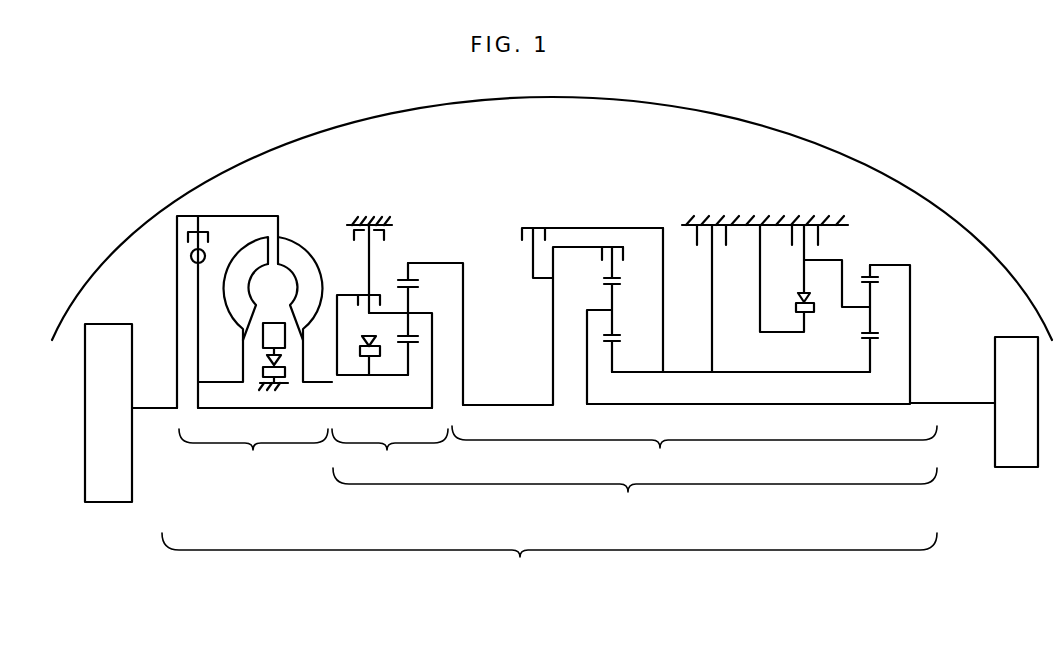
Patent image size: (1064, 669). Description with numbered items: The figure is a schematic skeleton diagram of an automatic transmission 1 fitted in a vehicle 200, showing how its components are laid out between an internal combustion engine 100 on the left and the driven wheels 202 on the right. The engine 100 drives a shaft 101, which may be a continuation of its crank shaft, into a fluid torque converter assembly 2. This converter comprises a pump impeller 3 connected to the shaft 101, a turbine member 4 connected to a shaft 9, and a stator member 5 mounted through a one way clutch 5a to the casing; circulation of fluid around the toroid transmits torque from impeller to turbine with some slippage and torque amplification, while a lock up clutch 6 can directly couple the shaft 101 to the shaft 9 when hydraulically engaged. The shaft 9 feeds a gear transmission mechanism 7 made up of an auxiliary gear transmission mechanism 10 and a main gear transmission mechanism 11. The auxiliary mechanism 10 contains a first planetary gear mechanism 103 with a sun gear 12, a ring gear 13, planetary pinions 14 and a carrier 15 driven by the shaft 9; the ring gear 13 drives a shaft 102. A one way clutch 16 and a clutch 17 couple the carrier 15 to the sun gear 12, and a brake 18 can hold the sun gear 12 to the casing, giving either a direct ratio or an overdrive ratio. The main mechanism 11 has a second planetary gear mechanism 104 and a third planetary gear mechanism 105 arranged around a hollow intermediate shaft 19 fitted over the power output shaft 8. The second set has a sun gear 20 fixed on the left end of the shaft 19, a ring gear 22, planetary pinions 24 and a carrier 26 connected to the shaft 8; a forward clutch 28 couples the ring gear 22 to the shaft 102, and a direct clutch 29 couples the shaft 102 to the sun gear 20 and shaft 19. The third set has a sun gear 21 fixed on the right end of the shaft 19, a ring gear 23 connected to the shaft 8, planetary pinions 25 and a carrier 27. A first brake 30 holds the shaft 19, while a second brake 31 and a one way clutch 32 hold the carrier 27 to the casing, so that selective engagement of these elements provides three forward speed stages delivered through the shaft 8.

The automatic transmission 1 is at (549, 560).
The fluid torque converter assembly 2 is at (252, 347).
The pump impeller 3 is at (293, 257).
The turbine member 4 is at (237, 311).
The stator member 5 is at (263, 338).
The one way clutch 5a is at (285, 371).
The lock up clutch 6 is at (200, 307).
The gear transmission mechanism 7 is at (635, 495).
The power output shaft 8 is at (961, 402).
The shaft 9 is at (352, 409).
The auxiliary gear transmission mechanism 10 is at (390, 453).
The main gear transmission mechanism 11 is at (694, 451).
The sun gear 12 is at (418, 347).
The ring gear 13 is at (403, 280).
The planetary pinions 14 is at (413, 288).
The carrier 15 is at (420, 341).
The one way clutch F0 16 is at (380, 352).
The clutch C0 17 is at (359, 293).
The brake B0 18 is at (361, 223).
The intermediate shaft 19 is at (724, 373).
The sun gear 20 is at (618, 342).
The sun gear 21 is at (878, 335).
The ring gear 22 is at (620, 280).
The ring gear 23 is at (878, 278).
The planetary pinions 24 is at (615, 322).
The planetary pinions 25 is at (877, 326).
The carrier 26 is at (587, 330).
The carrier 27 is at (843, 287).
The clutch C1 28 is at (615, 246).
The clutch C2 29 is at (531, 226).
The brake B1 30 is at (725, 224).
The brake B2 31 is at (816, 234).
The one way clutch F1 32 is at (796, 311).
The internal combustion engine 100 is at (113, 490).
The shaft 101 is at (162, 408).
The shaft 102 is at (513, 403).
The first planetary gear mechanism 103 is at (413, 263).
The second planetary gear mechanism 104 is at (624, 248).
The third planetary gear mechanism 105 is at (887, 262).
The vehicle 200 is at (813, 142).
The driven wheels 202 is at (1007, 459).